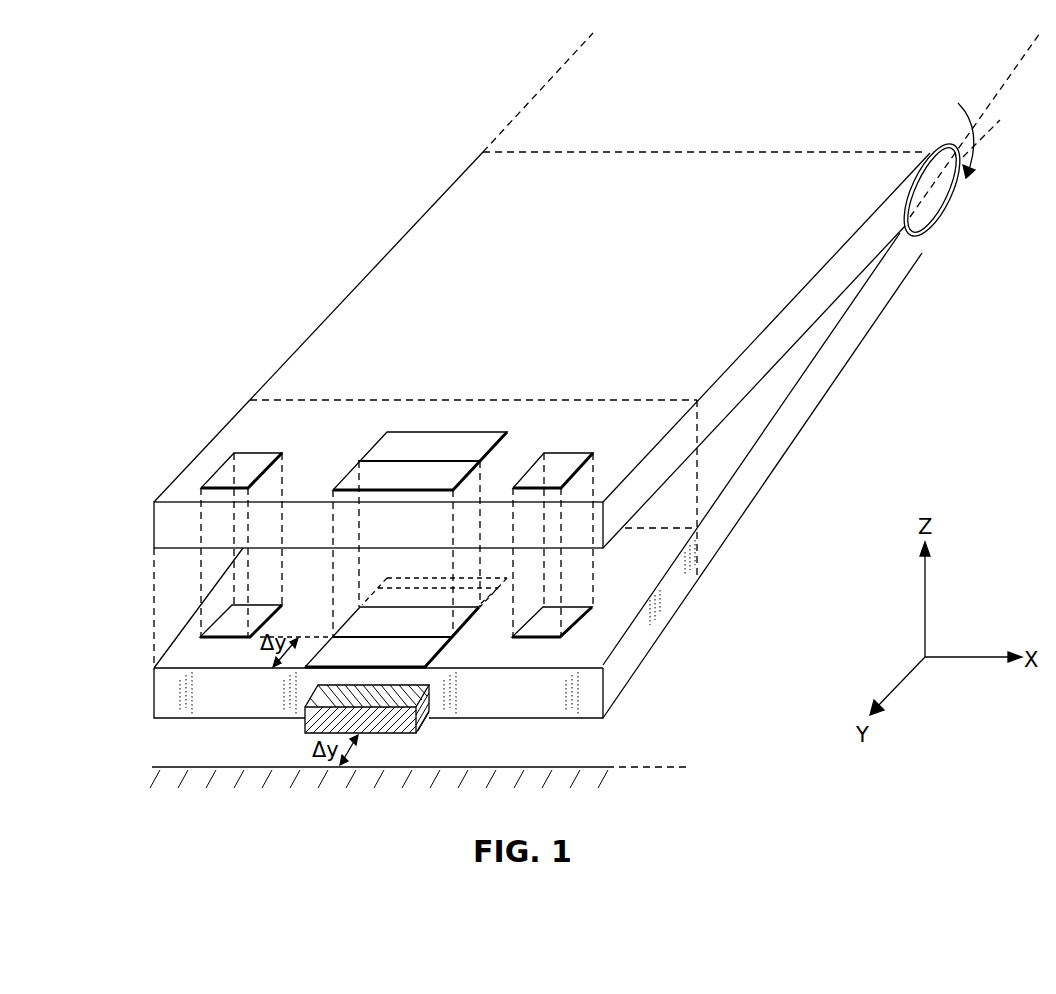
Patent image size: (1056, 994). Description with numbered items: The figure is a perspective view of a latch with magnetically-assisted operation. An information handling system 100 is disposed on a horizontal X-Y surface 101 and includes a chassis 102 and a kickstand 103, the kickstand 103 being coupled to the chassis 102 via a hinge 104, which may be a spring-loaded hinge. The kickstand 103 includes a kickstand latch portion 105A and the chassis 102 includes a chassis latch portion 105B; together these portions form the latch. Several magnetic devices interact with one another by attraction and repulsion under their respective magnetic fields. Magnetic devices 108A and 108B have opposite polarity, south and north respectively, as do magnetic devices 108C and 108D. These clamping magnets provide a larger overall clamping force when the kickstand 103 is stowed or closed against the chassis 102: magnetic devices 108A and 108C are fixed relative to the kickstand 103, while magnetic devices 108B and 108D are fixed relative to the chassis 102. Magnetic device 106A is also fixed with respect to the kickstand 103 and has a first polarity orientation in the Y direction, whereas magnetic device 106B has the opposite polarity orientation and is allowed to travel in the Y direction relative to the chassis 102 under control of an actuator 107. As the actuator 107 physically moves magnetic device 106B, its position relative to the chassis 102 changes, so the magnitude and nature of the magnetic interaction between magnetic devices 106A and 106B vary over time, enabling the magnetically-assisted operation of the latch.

The information handling system 100 is at (229, 152).
The horizontal surface 101 is at (285, 772).
The chassis 102 is at (777, 420).
The kickstand 103 is at (395, 278).
The hinge 104 is at (942, 198).
The kickstand latch portion 105A is at (237, 443).
The chassis latch portion 105B is at (668, 592).
The magnetic device 106A is at (362, 472).
The magnetic device 106B is at (364, 648).
The actuator 107 is at (385, 735).
The magnetic device 108A is at (262, 462).
The magnetic device 108B is at (262, 602).
The magnetic device 108C is at (567, 462).
The magnetic device 108D is at (580, 618).